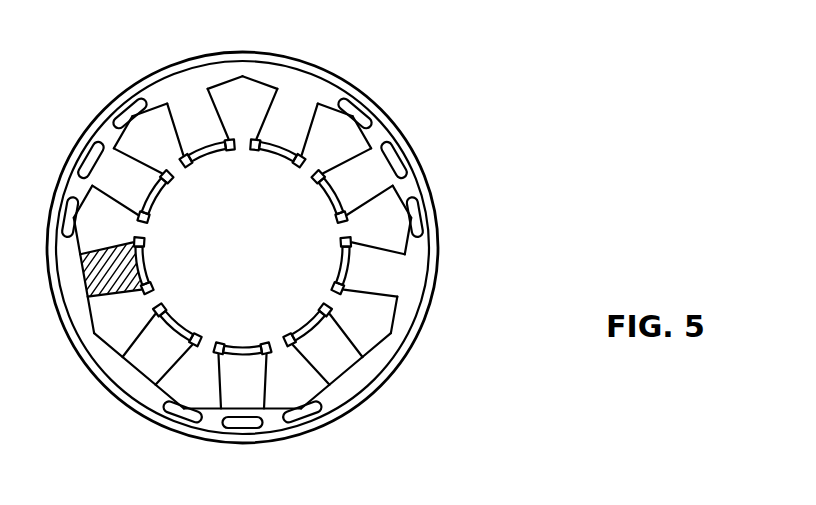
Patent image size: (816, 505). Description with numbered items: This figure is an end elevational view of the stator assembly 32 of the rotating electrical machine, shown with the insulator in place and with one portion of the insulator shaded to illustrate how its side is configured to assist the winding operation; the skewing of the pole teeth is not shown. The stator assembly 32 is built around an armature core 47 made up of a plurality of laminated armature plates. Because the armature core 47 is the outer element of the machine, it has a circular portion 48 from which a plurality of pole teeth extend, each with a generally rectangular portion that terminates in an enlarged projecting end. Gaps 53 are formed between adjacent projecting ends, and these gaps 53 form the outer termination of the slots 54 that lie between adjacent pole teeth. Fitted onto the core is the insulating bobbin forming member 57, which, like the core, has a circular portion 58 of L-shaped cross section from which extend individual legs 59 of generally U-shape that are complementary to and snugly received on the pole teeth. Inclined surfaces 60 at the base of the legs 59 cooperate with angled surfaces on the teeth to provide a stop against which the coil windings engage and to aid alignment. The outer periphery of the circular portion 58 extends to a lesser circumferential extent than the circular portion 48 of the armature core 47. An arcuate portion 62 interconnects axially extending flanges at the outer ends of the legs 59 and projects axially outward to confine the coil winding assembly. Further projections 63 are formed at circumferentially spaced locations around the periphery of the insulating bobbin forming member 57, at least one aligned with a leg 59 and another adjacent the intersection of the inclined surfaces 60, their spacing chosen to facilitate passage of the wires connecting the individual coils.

The stator assembly 32 is at (470, 104).
The armature core 47 is at (443, 206).
The circular portion 48 is at (432, 165).
The gaps 53 is at (340, 233).
The slots 54 is at (397, 338).
The insulating bobbin forming member 57 is at (415, 263).
The circular portion 58 is at (260, 73).
The legs 59 is at (420, 312).
The inclined surfaces 60 is at (273, 408).
The arcuate portion 62 is at (310, 318).
The further projections 63 is at (350, 110).